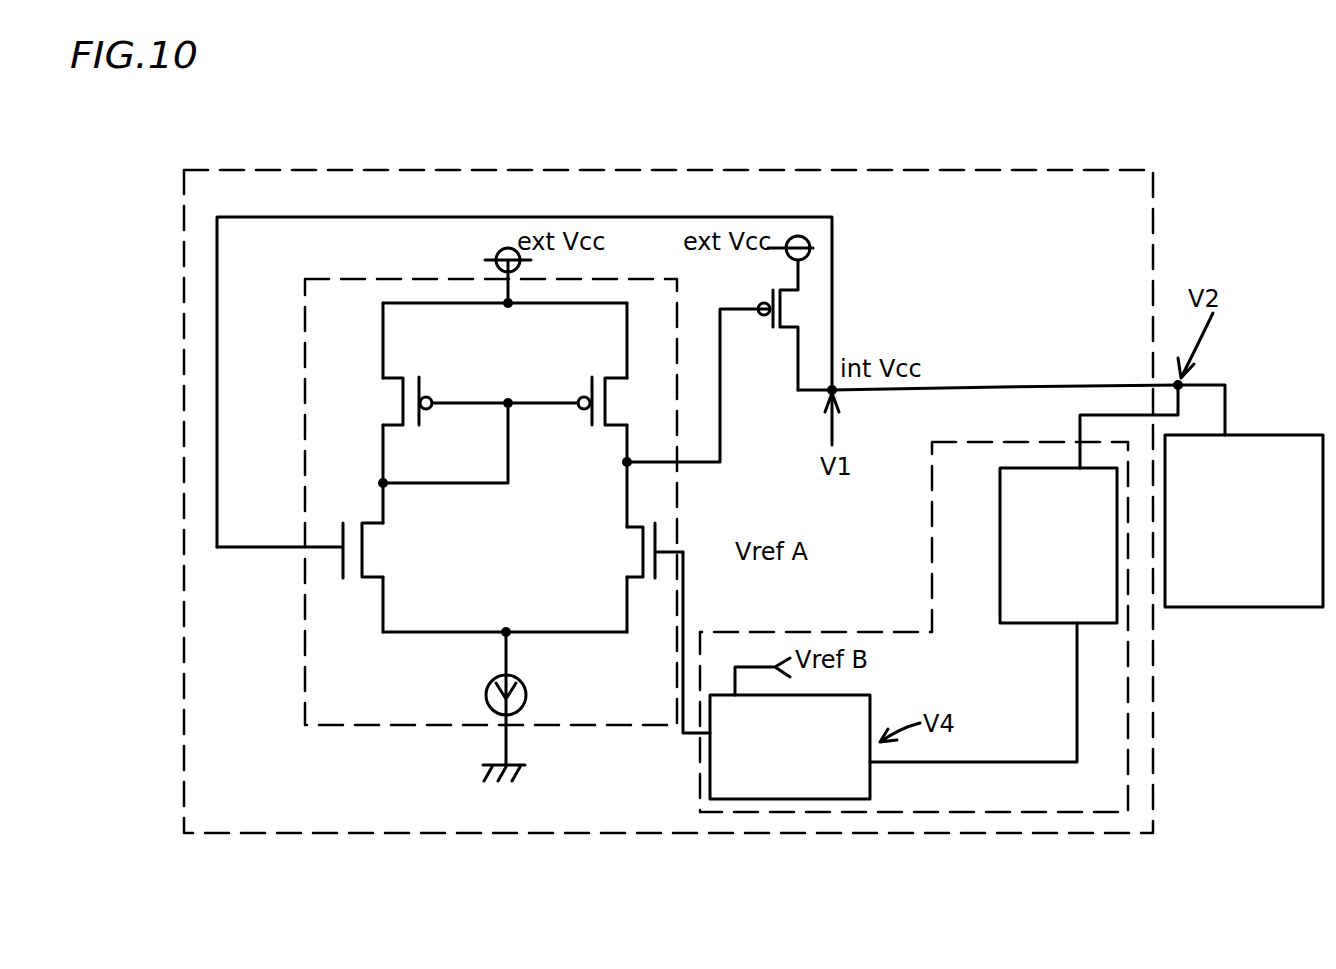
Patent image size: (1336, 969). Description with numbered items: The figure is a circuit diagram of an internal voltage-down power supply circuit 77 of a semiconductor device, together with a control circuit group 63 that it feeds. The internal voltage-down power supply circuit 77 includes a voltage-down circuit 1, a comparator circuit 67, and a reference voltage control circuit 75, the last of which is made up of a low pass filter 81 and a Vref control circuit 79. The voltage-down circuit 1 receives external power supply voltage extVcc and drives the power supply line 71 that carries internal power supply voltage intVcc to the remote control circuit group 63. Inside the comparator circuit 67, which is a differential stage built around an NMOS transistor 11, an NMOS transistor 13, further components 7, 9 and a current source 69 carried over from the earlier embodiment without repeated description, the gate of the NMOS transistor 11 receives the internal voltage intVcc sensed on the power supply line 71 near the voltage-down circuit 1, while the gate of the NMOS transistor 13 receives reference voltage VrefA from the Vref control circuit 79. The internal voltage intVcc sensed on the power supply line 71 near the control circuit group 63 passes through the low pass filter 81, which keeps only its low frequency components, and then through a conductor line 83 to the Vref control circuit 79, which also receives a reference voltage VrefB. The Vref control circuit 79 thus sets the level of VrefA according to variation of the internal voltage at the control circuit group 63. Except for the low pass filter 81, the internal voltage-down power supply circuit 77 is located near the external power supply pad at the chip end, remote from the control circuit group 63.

The voltage-down circuit 1 is at (773, 332).
The P-channel MOS transistor 7 is at (428, 386).
The P-channel MOS transistor 9 is at (597, 375).
The NMOS transistor 11 is at (366, 553).
The NMOS transistor 13 is at (636, 548).
The control circuit group 63 is at (1252, 608).
The comparator circuit 67 is at (355, 726).
The constant current source 69 is at (527, 690).
The power supply line 71 is at (993, 380).
The reference voltage control circuit 75 is at (813, 632).
The internal voltage-down power supply circuit 77 is at (1153, 736).
The Vref control circuit 79 is at (872, 708).
The low pass filter 81 is at (1043, 623).
The conductor line 83 is at (995, 762).